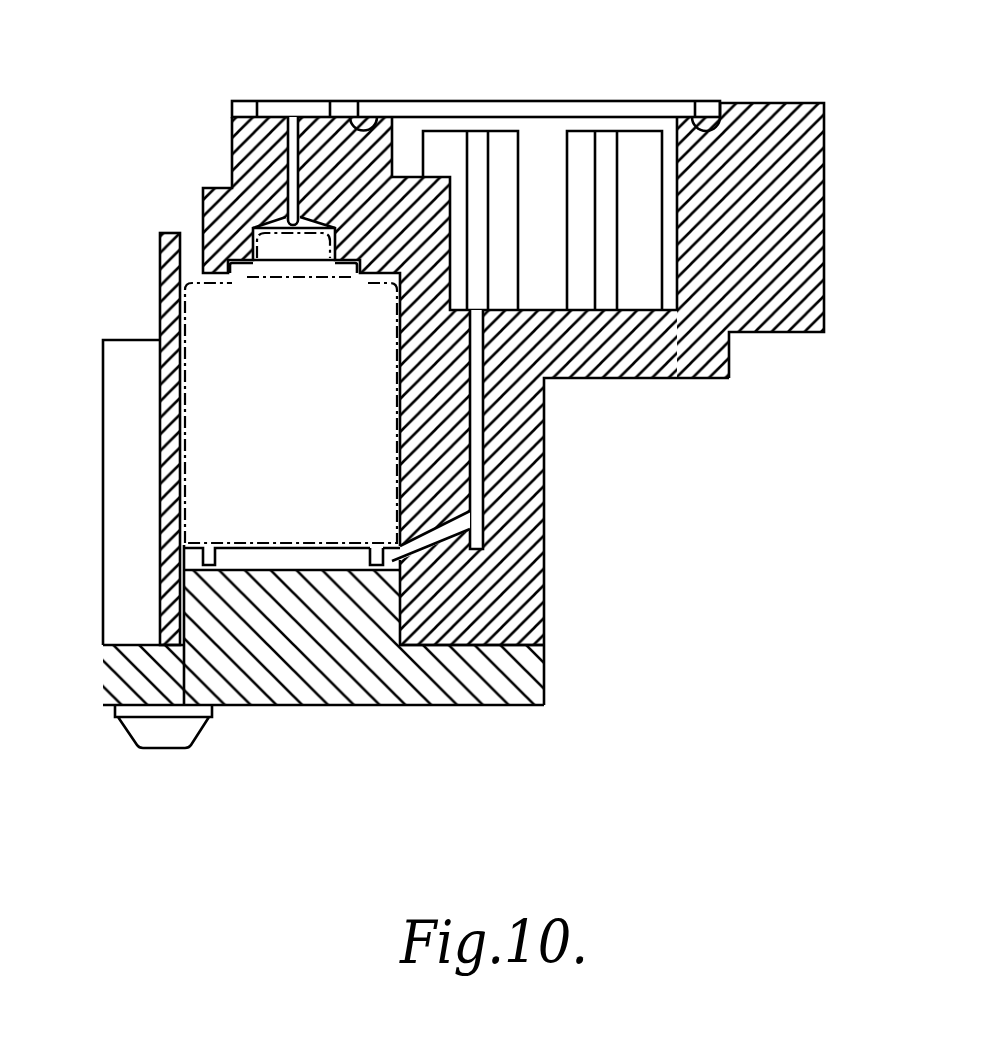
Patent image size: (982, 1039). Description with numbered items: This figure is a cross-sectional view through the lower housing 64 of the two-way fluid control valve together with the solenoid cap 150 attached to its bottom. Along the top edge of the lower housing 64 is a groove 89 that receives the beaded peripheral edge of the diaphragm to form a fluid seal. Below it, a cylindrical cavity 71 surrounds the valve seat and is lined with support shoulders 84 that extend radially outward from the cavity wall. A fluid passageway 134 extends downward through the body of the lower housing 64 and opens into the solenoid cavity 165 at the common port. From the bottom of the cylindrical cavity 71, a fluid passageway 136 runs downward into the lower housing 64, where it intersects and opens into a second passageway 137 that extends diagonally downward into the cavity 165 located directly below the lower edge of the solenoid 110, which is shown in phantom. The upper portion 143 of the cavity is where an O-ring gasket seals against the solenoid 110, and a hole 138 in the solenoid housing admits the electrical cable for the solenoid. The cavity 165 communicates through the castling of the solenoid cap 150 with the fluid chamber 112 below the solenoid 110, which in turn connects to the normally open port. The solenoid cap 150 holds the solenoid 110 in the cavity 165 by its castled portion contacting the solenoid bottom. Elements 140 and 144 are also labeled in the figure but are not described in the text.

The lower housing 64 is at (828, 150).
The cover plate 144 is at (458, 111).
The groove 89 is at (708, 120).
The cylindrical cavity 71 is at (541, 134).
The support shoulders 84 is at (608, 134).
The fluid passageway 134 is at (292, 171).
The cap 140 is at (256, 274).
The upper portion of the cavity 143 is at (228, 268).
The hole 138 is at (185, 262).
The solenoid 110 is at (182, 385).
The fluid passageway 136 is at (478, 447).
The second passageway 137 is at (428, 540).
The cavity 165 is at (414, 549).
The fluid chamber 112 is at (298, 557).
The solenoid cap 150 is at (345, 708).